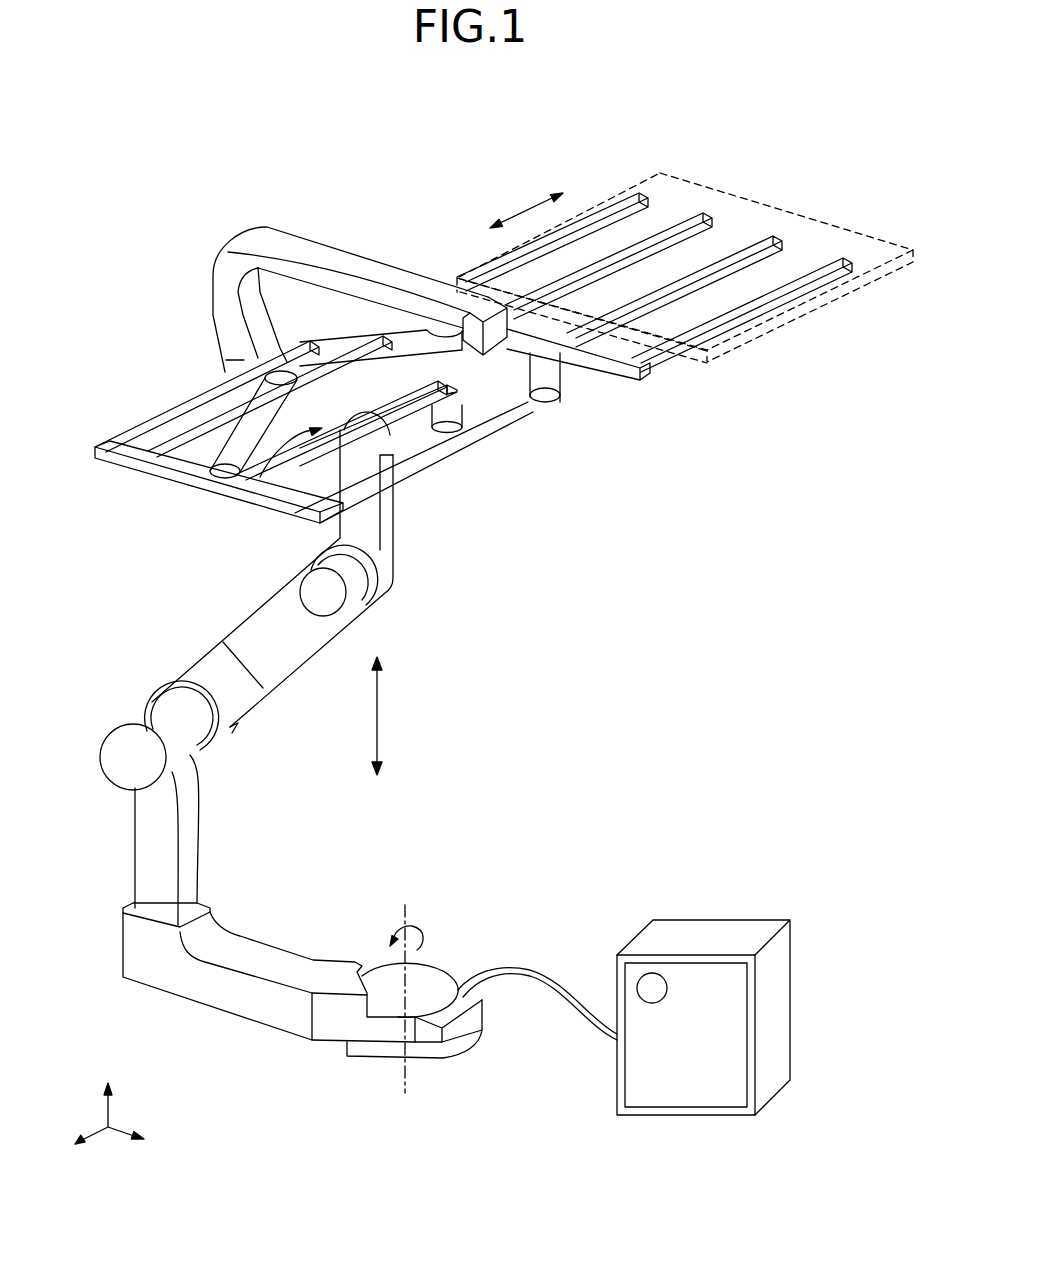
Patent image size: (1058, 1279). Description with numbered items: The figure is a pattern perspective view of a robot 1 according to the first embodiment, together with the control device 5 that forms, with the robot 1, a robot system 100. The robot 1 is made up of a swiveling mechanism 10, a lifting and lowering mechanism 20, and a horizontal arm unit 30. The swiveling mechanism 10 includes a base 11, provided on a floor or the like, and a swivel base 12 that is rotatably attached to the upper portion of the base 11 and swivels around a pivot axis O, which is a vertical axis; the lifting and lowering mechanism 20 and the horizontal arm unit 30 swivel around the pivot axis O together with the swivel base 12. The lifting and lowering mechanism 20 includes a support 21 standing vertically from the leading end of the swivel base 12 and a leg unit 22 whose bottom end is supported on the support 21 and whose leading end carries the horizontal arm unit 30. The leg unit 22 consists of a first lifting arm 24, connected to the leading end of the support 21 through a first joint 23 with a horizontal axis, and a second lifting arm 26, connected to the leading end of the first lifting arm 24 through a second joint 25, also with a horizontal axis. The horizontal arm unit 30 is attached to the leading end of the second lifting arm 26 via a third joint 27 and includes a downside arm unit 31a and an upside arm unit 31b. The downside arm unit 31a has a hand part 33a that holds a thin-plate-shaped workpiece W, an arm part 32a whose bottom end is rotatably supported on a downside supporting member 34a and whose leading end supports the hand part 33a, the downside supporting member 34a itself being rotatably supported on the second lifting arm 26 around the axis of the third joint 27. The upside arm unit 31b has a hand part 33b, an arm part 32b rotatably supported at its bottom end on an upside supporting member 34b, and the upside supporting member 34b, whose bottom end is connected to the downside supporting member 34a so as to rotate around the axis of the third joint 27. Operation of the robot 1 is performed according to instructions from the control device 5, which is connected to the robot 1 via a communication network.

The robot 1 is at (160, 198).
The control device 5 is at (710, 924).
The swiveling mechanism 10 is at (459, 906).
The base 11 is at (430, 1050).
The swivel base 12 is at (267, 956).
The lifting and lowering mechanism 20 is at (485, 661).
The support 21 is at (157, 830).
The leg unit 22 is at (441, 605).
The first joint 23 is at (126, 706).
The first lifting arm 24 is at (273, 670).
The second joint 25 is at (273, 567).
The second lifting arm 26 is at (374, 547).
The third joint 27 is at (222, 481).
The horizontal arm unit 30 is at (220, 234).
The downside arm unit 31a is at (608, 160).
The upside arm unit 31b is at (106, 402).
The arm part 32a is at (557, 378).
The arm part 32b is at (248, 430).
The hand part 33a is at (658, 364).
The hand part 33b is at (166, 472).
The downside supporting member 34a is at (396, 388).
The upside supporting member 34b is at (317, 250).
The robot system 100 is at (801, 541).
The workpiece W is at (768, 203).
The pivot axis O is at (406, 987).